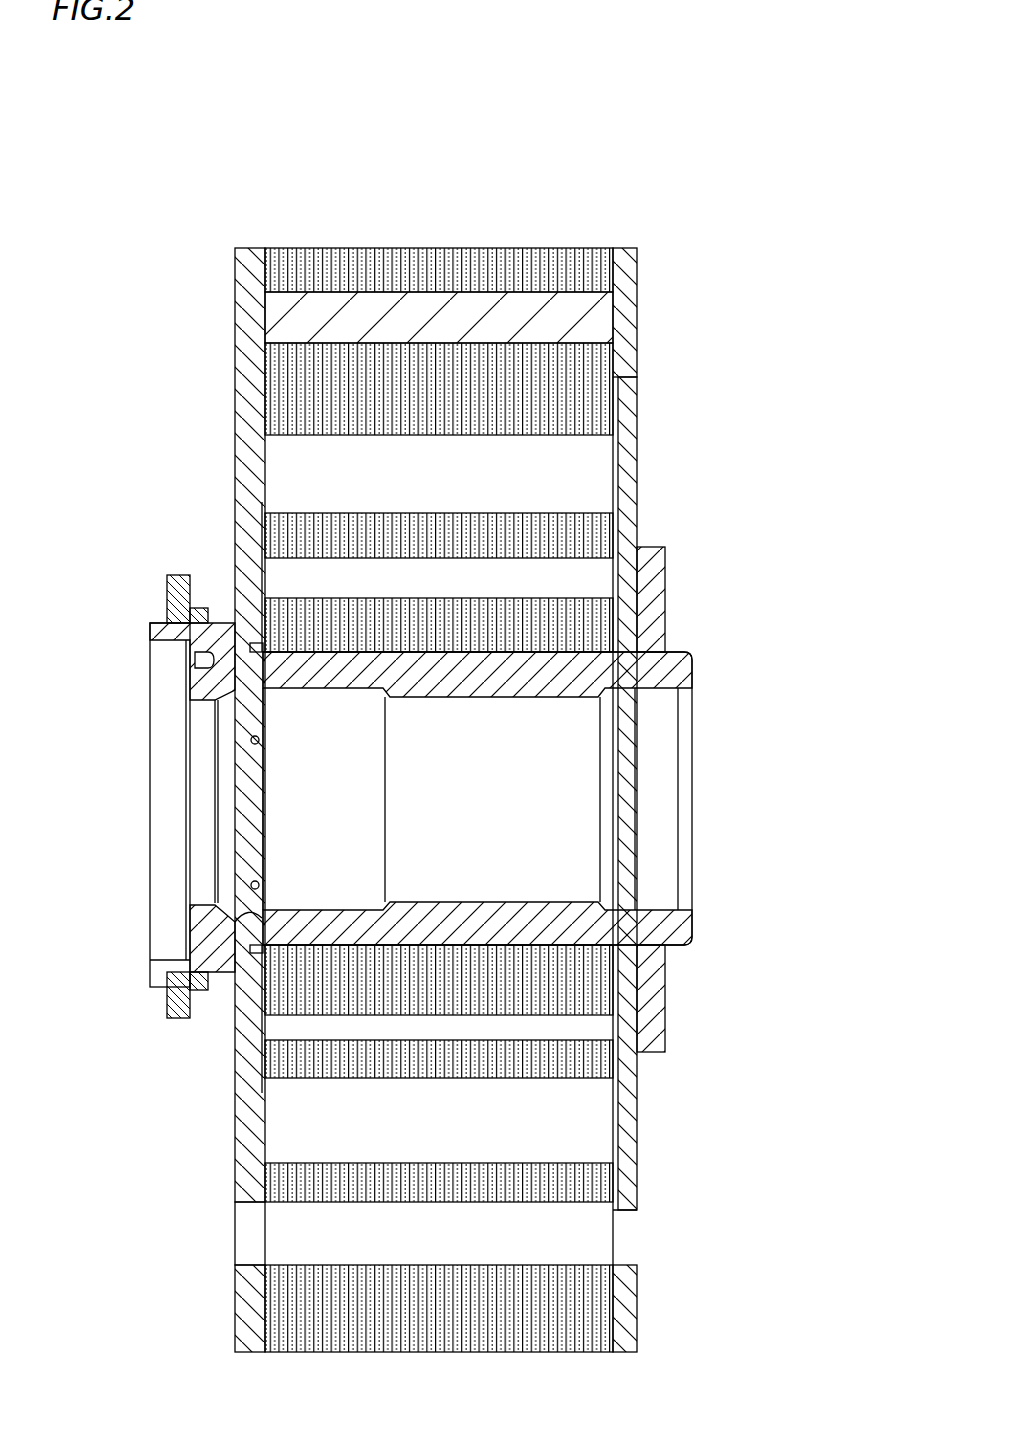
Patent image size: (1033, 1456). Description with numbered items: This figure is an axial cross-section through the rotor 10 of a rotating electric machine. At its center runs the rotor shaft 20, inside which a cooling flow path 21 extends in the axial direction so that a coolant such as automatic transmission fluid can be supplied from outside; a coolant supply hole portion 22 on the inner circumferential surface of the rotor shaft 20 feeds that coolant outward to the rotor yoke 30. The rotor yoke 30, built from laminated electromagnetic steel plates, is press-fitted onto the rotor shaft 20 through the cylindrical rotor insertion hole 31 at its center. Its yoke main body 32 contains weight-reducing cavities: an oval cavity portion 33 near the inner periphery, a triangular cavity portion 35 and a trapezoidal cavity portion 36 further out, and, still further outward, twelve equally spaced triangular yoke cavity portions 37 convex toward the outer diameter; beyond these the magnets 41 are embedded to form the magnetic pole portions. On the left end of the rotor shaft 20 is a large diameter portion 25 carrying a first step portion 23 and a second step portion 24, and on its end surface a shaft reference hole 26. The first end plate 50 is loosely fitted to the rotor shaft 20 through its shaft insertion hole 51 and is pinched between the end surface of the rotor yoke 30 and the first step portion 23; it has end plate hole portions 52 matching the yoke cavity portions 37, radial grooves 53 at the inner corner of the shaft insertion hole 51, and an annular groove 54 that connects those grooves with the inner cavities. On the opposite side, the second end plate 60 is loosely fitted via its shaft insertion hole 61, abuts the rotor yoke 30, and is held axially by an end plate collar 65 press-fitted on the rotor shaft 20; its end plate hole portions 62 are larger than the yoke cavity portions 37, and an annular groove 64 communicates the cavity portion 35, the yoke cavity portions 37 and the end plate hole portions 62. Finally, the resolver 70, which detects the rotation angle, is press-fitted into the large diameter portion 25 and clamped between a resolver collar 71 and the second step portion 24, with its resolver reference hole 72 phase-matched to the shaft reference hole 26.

The rotor 10 is at (689, 143).
The rotor shaft 20 is at (706, 666).
The cooling flow path 21 is at (585, 812).
The coolant supply hole portion 22 is at (213, 705).
The first step portion 23 is at (240, 998).
The second step portion 24 is at (165, 1005).
The large diameter portion 25 is at (190, 950).
The shaft reference hole 26 is at (195, 657).
The rotor yoke 30 is at (415, 236).
The rotor insertion hole 31 is at (600, 728).
The yoke main body 32 is at (518, 370).
The cavity portion 33 is at (583, 585).
The cavity portion 35 is at (598, 490).
The cavity portion 36 is at (585, 1125).
The yoke cavity portion 37 is at (585, 1230).
The magnet 41 is at (598, 318).
The first end plate 50 is at (240, 248).
The shaft insertion hole 51 is at (213, 888).
The end plate hole portion 52 is at (250, 1255).
The radial groove 53 is at (258, 905).
The annular groove 54 is at (262, 1040).
The second end plate 60 is at (625, 248).
The shaft insertion hole 61 is at (620, 668).
The end plate hole portion 62 is at (625, 1255).
The annular groove 64 is at (600, 455).
The end plate collar 65 is at (660, 595).
The resolver 70 is at (176, 568).
The resolver collar 71 is at (197, 608).
The resolver reference hole 72 is at (167, 597).